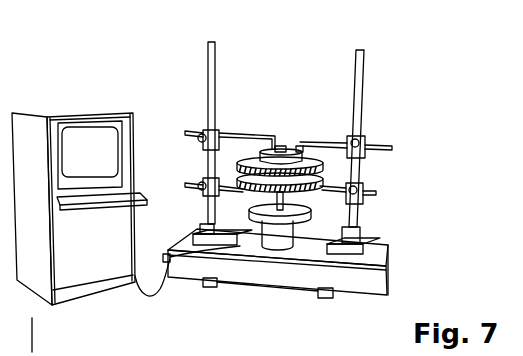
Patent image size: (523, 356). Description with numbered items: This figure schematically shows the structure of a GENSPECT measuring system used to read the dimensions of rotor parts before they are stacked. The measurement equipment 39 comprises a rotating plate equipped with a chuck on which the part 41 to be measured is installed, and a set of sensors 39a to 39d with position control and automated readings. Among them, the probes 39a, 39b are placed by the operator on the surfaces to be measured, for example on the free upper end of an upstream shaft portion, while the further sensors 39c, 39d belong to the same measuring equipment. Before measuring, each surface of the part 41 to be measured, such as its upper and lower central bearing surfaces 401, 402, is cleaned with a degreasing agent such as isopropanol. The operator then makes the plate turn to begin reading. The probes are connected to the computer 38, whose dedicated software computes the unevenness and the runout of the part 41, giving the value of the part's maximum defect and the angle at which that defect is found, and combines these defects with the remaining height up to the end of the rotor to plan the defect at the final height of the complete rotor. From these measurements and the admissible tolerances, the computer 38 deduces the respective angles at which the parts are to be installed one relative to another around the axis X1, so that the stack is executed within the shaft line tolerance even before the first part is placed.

The computer 38 is at (91, 142).
The measurement equipment 39 is at (350, 91).
The probe 39a is at (290, 150).
The probe 39b is at (297, 150).
The sensor 39c is at (276, 246).
The sensor 39d is at (311, 196).
The upper central bearing surface 401 is at (292, 148).
The lower central bearing surface 402 is at (303, 218).
The part 41 is at (326, 172).
The axis X1 is at (32, 333).